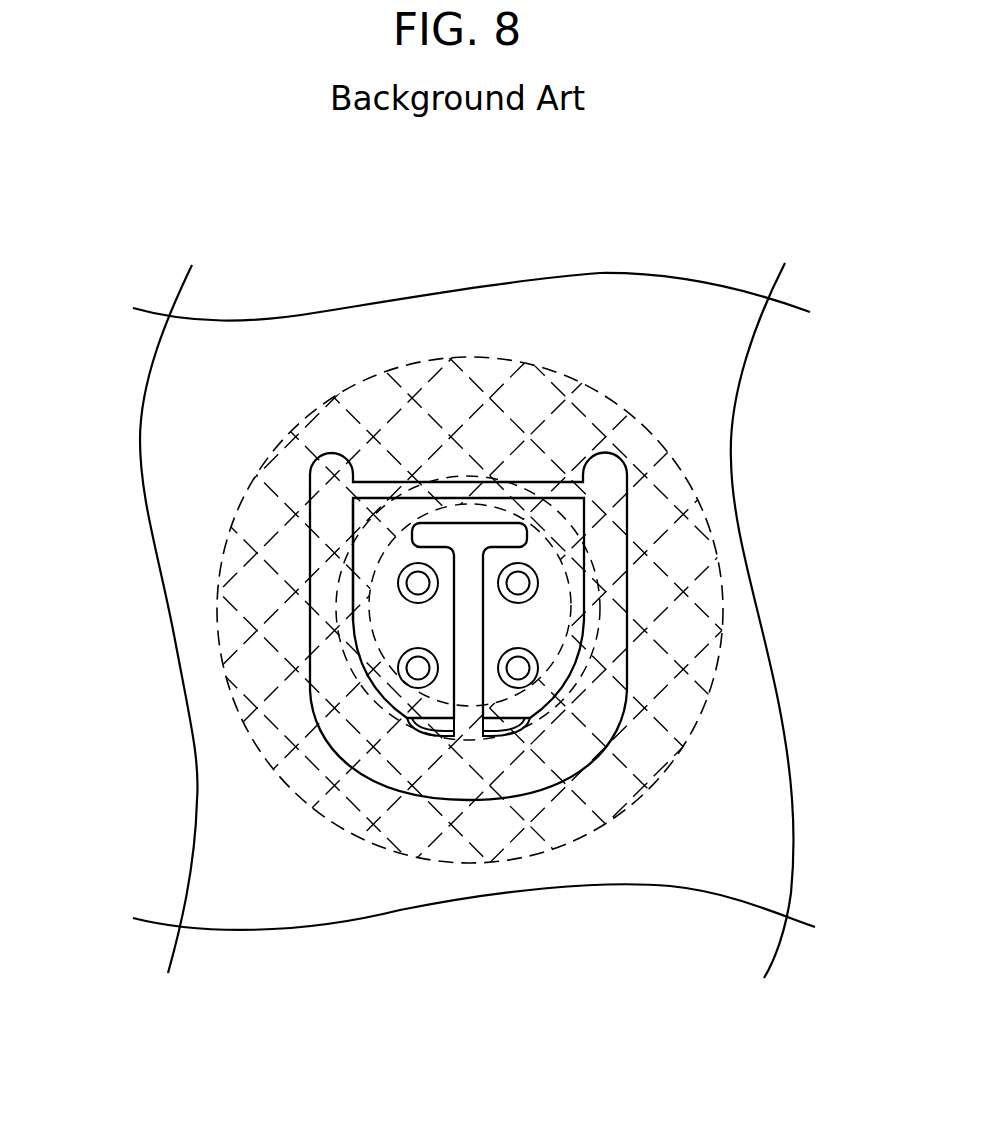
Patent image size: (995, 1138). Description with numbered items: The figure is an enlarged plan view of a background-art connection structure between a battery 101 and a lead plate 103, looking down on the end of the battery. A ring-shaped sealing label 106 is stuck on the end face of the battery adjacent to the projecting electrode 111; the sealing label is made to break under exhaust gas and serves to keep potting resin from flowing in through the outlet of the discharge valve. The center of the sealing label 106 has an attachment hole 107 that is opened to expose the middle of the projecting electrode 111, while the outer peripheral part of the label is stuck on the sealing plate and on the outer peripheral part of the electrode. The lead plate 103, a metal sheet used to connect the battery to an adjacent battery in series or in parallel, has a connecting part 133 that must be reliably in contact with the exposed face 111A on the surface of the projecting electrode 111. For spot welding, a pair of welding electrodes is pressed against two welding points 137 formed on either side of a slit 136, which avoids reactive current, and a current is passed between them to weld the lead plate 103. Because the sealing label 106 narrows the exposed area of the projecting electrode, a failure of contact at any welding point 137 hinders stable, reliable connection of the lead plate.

The battery 101 is at (422, 357).
The lead plate 103 is at (645, 838).
The sealing label 106 is at (456, 800).
The attachment hole 107 is at (472, 720).
The projecting electrode 111 is at (353, 593).
The exposed face 111A is at (378, 628).
The connecting part 133 is at (542, 615).
The slit 136 is at (473, 633).
The welding point 137 is at (418, 668).